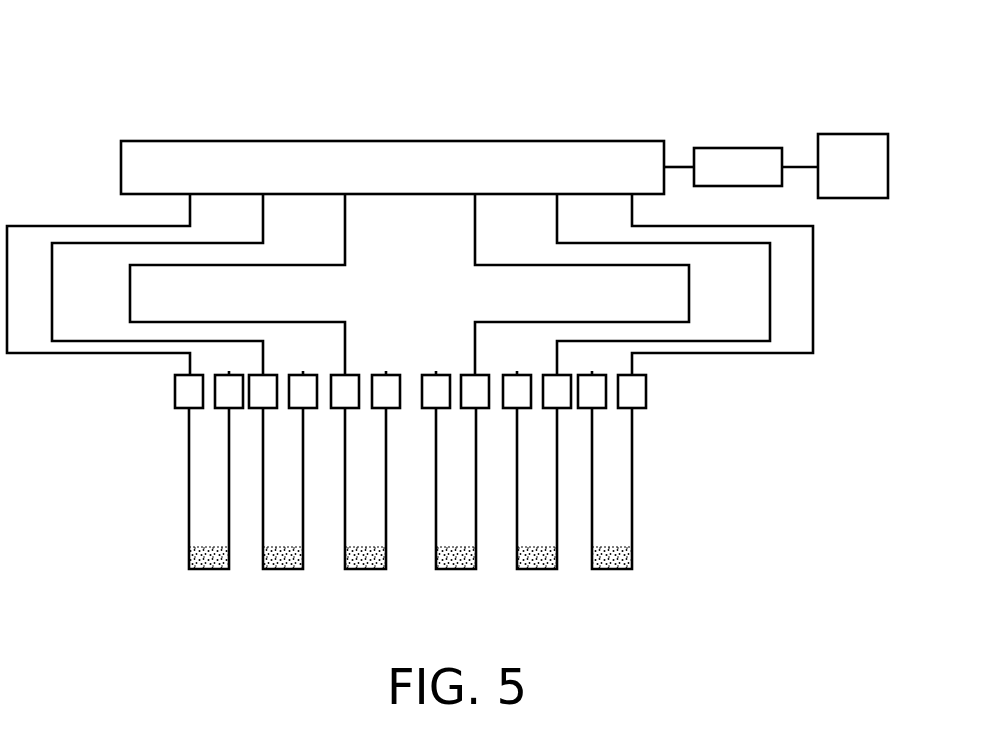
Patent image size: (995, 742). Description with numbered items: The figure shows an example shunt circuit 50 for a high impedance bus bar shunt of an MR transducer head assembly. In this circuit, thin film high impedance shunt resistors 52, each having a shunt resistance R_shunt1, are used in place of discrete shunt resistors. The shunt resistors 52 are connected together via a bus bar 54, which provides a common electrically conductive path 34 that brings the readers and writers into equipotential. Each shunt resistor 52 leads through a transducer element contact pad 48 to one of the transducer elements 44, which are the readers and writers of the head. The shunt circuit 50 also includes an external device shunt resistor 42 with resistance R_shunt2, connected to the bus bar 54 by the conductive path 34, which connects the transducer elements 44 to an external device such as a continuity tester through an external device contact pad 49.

The shunt circuit 50 is at (120, 34).
The bus bar 54 is at (416, 134).
The common electrically conductive path 34 is at (688, 162).
The external device shunt resistor 42 is at (762, 148).
The external device contact pad 49 is at (857, 200).
The thin film high impedance shunt resistor 52 is at (347, 326).
The transducer element contact pad 48 is at (175, 398).
The transducer element 44 is at (627, 569).